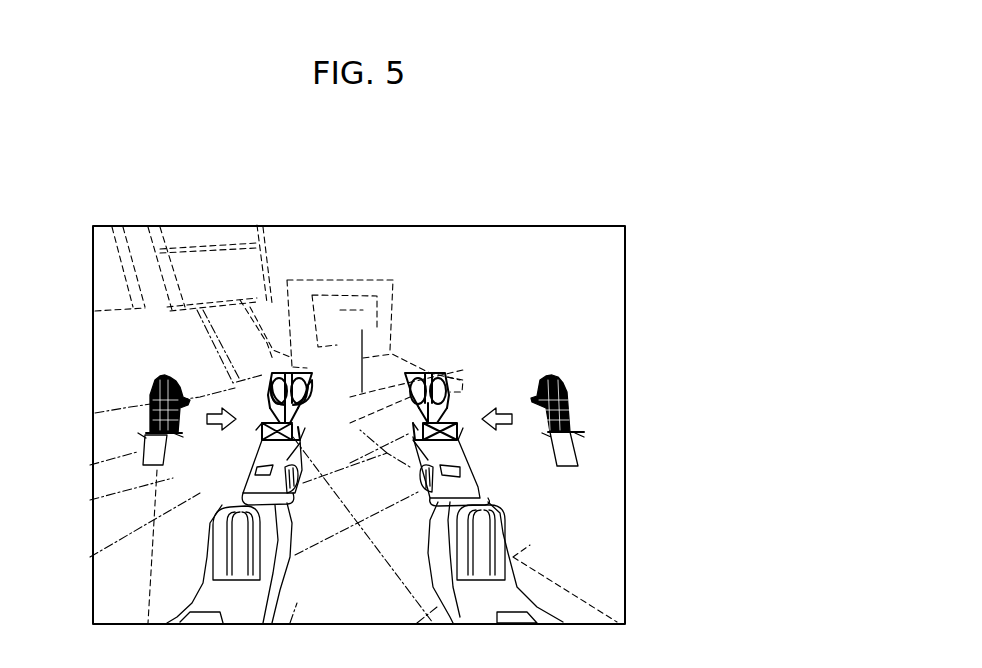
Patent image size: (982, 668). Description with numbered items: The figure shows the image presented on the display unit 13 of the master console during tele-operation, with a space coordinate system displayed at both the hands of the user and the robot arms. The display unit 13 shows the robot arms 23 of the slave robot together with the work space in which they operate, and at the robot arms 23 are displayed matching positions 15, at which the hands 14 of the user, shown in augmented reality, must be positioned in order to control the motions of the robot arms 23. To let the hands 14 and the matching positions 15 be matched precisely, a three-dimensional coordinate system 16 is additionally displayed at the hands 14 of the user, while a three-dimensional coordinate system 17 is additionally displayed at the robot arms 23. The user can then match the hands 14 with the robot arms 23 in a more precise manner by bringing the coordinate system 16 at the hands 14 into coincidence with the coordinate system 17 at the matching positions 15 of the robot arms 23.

The display unit 13 is at (625, 226).
The hands of a user 14 is at (150, 392).
The matching positions 15 is at (308, 375).
The three-dimensional coordinate system 16 is at (175, 437).
The three-dimensional coordinate system 17 is at (413, 437).
The robot arms 23 is at (246, 470).